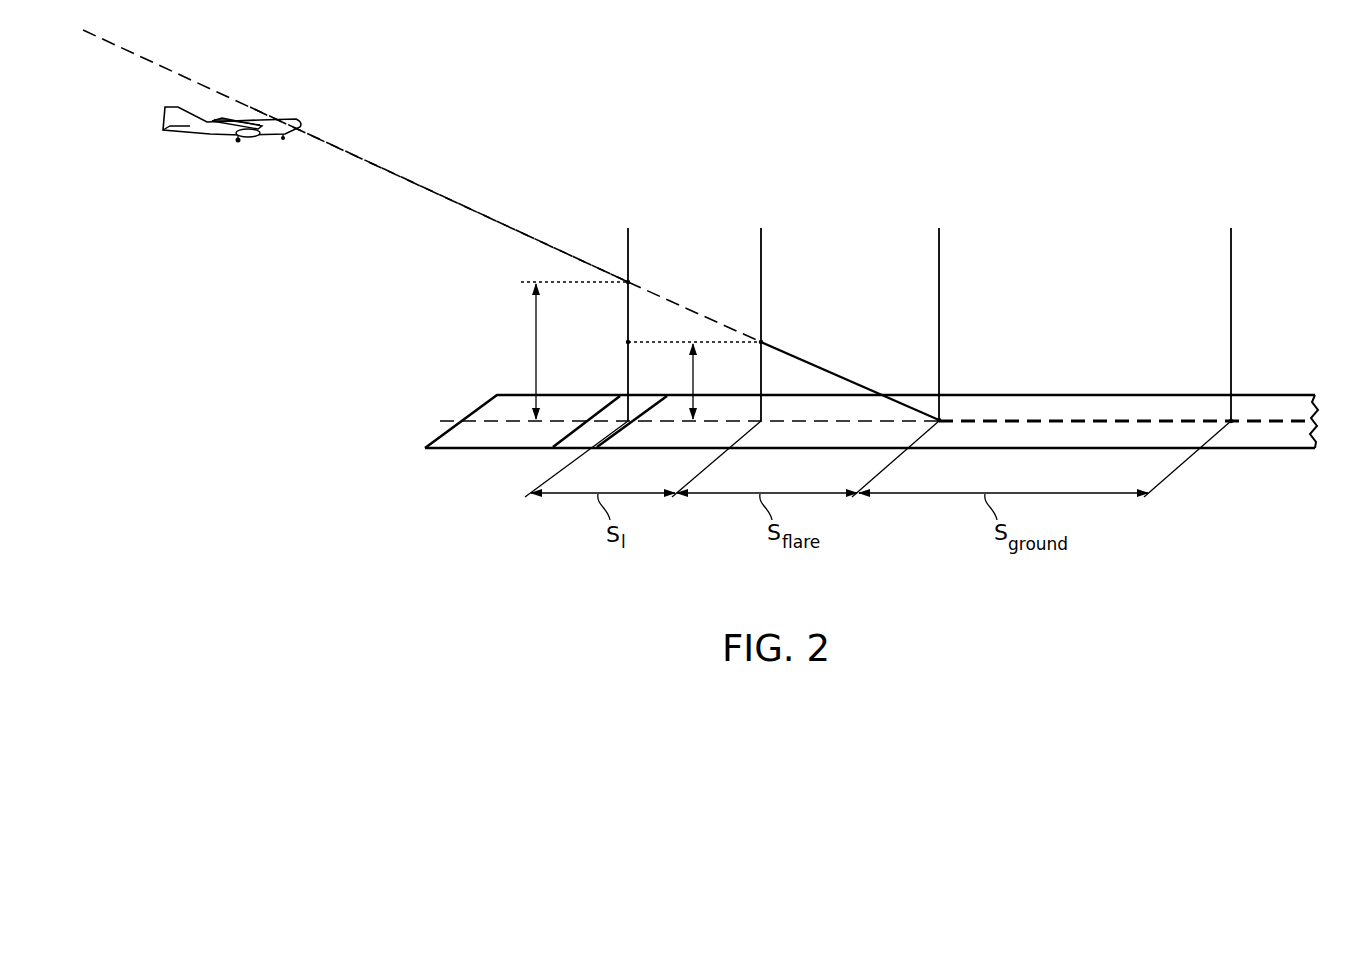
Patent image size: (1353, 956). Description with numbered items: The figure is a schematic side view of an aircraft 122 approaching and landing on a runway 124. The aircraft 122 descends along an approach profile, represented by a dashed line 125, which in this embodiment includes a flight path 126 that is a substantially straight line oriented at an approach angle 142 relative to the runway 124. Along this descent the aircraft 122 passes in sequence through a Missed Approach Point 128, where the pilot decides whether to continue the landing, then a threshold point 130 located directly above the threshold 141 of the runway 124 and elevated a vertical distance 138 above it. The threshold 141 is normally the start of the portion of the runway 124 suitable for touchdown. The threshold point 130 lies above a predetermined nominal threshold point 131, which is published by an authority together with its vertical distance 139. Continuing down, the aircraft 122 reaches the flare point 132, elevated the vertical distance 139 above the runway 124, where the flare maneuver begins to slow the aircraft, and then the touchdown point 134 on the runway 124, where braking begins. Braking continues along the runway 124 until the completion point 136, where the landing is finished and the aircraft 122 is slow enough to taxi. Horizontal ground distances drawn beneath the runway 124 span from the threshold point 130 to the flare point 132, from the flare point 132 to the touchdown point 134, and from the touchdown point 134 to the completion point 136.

The aircraft 122 is at (216, 137).
The runway 124 is at (993, 412).
The approach profile 125 is at (443, 192).
The flight path 126 is at (472, 209).
The Missed Approach Point 128 is at (382, 169).
The threshold point 130 is at (628, 282).
The nominal threshold point 131 is at (628, 342).
The flare point 132 is at (761, 342).
The touchdown point 134 is at (939, 419).
The completion point 136 is at (1232, 420).
The vertical distance 138 is at (538, 351).
The vertical distance 139 is at (697, 381).
The threshold 141 is at (623, 418).
The approach angle 142 is at (808, 417).